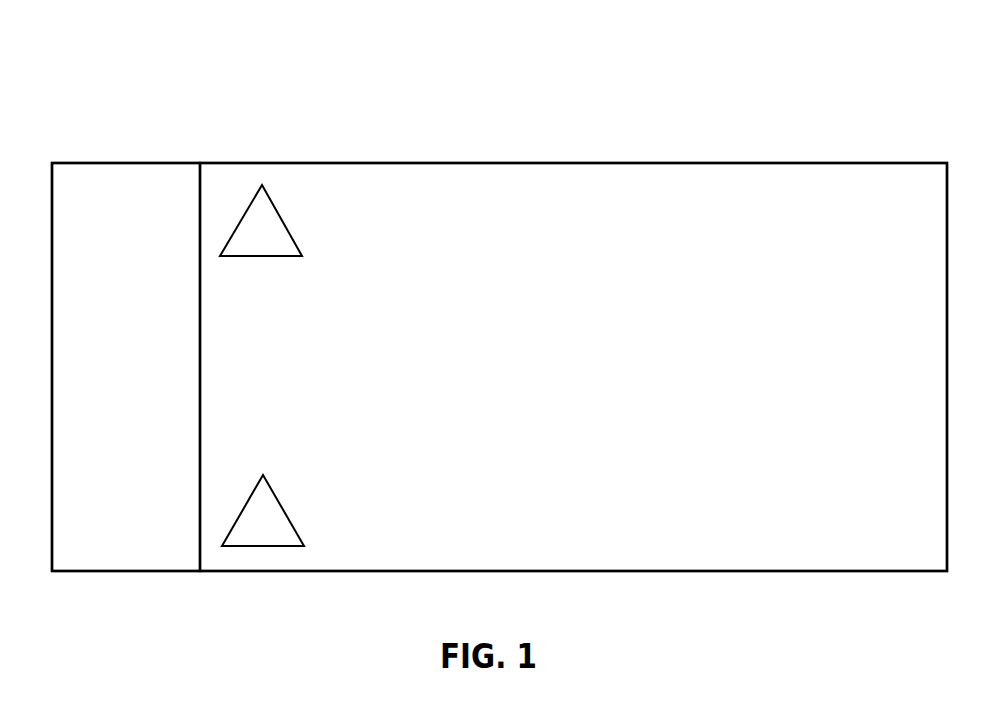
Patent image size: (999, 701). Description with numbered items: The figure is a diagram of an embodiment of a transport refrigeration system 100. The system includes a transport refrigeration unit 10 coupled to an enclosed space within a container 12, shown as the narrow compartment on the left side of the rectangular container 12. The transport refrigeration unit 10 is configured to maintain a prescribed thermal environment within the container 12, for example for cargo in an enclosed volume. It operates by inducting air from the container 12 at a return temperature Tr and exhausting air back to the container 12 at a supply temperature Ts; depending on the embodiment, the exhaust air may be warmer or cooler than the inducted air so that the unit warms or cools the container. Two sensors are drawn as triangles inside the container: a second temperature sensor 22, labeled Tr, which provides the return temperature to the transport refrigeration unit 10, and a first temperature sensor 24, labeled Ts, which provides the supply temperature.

The transport refrigeration system 100 is at (519, 46).
The transport refrigeration unit 10 is at (126, 367).
The container 12 is at (573, 367).
The second temperature sensor 22 is at (287, 221).
The first temperature sensor 24 is at (290, 500).